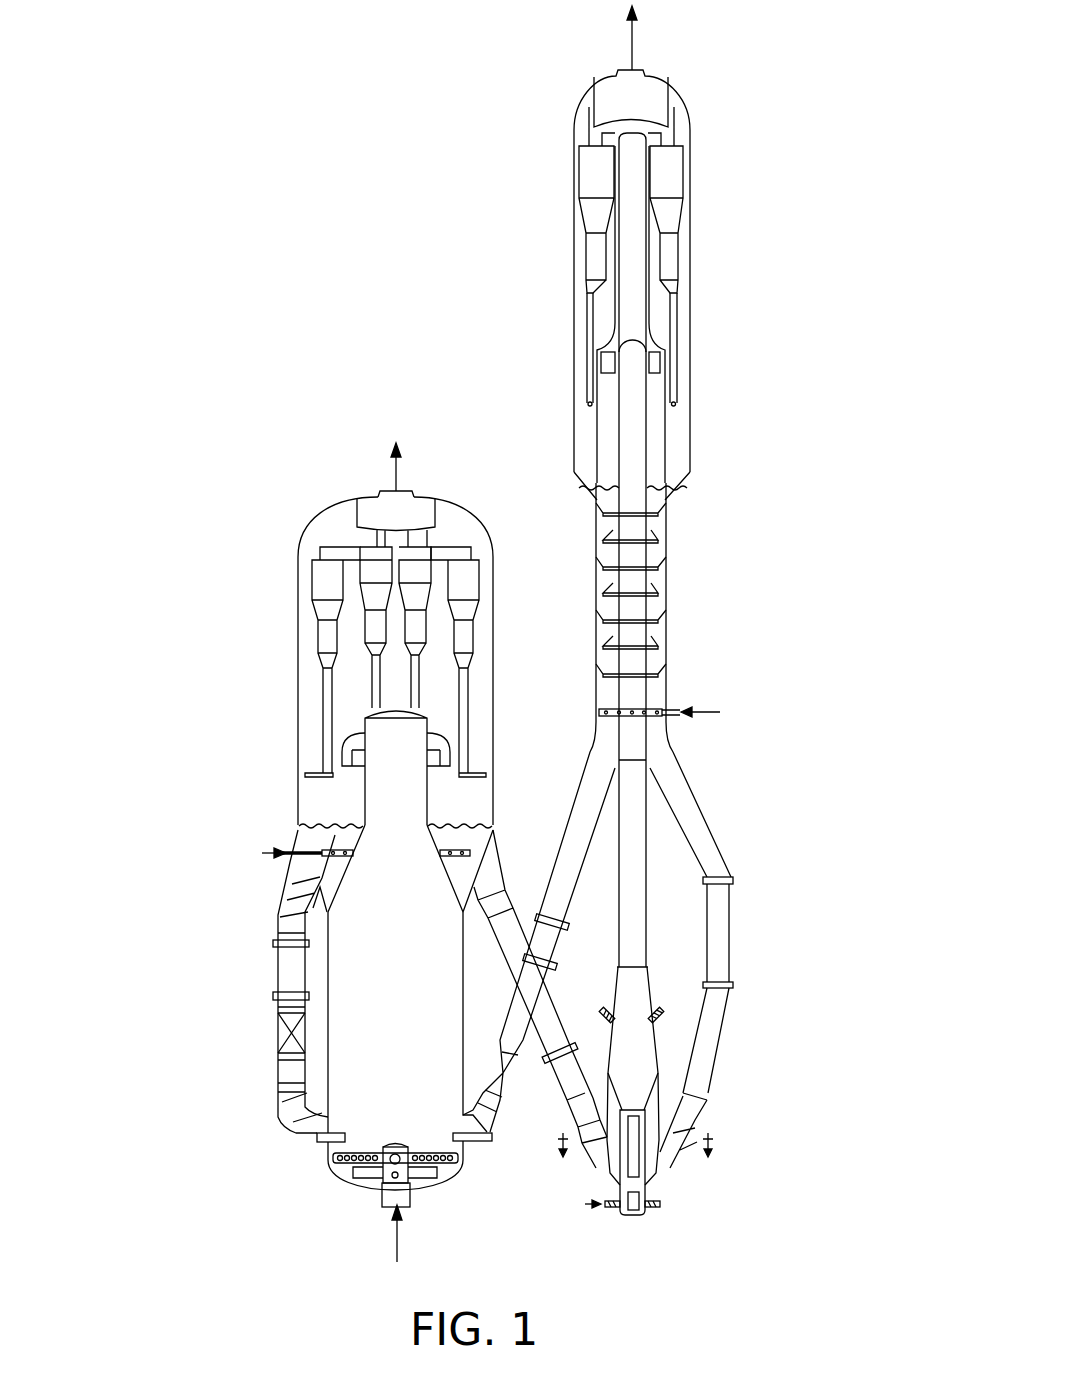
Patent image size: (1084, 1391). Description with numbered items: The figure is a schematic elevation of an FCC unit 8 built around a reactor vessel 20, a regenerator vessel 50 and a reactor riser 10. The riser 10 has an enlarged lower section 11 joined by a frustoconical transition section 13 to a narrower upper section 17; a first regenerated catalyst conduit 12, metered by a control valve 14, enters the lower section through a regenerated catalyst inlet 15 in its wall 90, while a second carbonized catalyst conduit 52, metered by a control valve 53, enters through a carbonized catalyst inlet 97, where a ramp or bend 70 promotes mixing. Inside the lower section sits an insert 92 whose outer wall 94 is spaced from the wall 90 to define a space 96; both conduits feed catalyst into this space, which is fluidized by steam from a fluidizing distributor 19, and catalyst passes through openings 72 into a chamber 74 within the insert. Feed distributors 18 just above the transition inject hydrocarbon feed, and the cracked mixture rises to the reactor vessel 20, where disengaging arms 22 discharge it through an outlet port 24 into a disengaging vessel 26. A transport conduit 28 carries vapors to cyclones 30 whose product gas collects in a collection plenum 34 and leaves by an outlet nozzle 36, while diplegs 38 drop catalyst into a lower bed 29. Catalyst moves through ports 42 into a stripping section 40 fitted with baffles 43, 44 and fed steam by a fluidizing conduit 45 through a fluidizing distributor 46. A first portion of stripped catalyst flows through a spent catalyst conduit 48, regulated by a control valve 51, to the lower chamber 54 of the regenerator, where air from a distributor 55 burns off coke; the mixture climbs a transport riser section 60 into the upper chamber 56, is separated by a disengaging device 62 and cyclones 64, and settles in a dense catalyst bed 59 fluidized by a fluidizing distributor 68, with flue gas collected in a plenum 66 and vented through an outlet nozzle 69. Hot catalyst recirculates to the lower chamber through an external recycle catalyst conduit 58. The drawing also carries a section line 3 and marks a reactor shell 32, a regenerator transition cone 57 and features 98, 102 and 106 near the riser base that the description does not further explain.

The section line 3- 3 is at (636, 1143).
The FCC unit 8 is at (343, 291).
The reactor riser 10 is at (666, 951).
The enlarged lower section 11 is at (607, 1113).
The first regenerated catalyst conduit 12 is at (546, 997).
The frustoconical transition section 13 is at (650, 1045).
The control valve 14 is at (580, 1113).
The regenerated catalyst inlet 15 is at (610, 1173).
The narrower upper section 17 is at (648, 829).
The feed distributors 18 is at (614, 1010).
The fluidizing distributor 19 is at (605, 1210).
The reactor vessel 20 is at (772, 520).
The disengaging arms 22 is at (608, 352).
The outlet port 24 is at (657, 365).
The disengaging vessel 26 is at (658, 428).
The transport conduit 28 is at (630, 218).
The lower bed 29 is at (670, 497).
The cyclones 30 is at (595, 163).
The reactor vessel 32 is at (683, 290).
The collection plenum 34 is at (650, 95).
The outlet nozzle 36 is at (615, 72).
The diplegs 38 is at (590, 365).
The stripping section 40 is at (657, 583).
The ports 42 is at (597, 485).
The baffles 43 is at (653, 615).
The baffles 44 is at (645, 588).
The fluidizing conduit 45 is at (663, 714).
The fluidizing distributor 46 is at (660, 712).
The spent catalyst conduit 48 is at (575, 855).
The regenerator vessel 50 is at (212, 731).
The control valve 51 is at (505, 1077).
The second carbonized catalyst conduit 52 is at (705, 843).
The control valve 53 is at (690, 1130).
The lower chamber 54 is at (452, 1062).
The distributor 55 is at (393, 1197).
The upper chamber 56 is at (493, 700).
The conical transition 57 is at (450, 873).
The external recycle catalyst conduit 58 is at (292, 977).
The dense catalyst bed 59 is at (298, 837).
The transport riser section 60 is at (412, 798).
The disengaging device 62 is at (352, 737).
The cyclones 64 is at (380, 567).
The plenum 66 is at (382, 510).
The fluidizing distributor 68 is at (470, 853).
The outlet nozzle 69 is at (413, 494).
The ramp or bend 70 is at (655, 1192).
The openings 72 is at (633, 1093).
The chamber 74 is at (638, 1117).
The wall 90 is at (585, 1204).
The insert 92 is at (653, 1204).
The outer wall 94 is at (655, 1200).
The space 96 is at (653, 1138).
The carbonized catalyst inlet 97 is at (655, 1197).
The supply line 98 is at (622, 1187).
The slide valve 102 is at (577, 1053).
The distributor arm 106 is at (650, 1118).